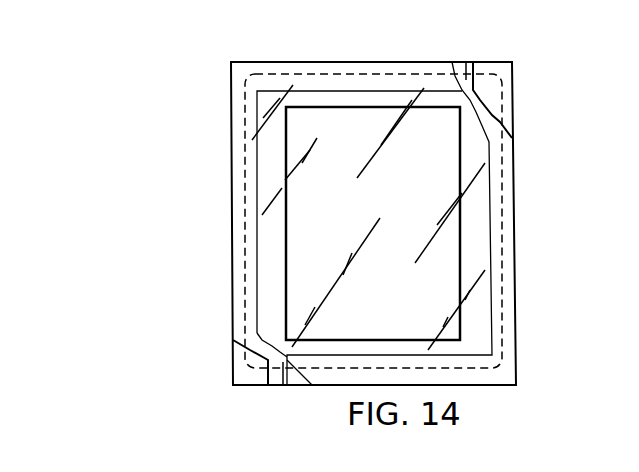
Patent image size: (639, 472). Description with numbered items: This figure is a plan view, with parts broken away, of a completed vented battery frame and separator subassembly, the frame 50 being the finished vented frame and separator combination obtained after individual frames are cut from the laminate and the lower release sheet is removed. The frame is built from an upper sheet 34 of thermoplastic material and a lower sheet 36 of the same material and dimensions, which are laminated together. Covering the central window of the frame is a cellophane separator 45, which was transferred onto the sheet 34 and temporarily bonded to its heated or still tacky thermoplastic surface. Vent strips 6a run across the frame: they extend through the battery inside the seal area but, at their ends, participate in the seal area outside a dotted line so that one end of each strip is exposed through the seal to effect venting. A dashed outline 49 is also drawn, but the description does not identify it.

The strips 6a is at (472, 49).
The sheet 34 is at (502, 172).
The sheet 36 is at (488, 90).
The cellophane separator 45 is at (477, 241).
The sealing strip 49 is at (335, 74).
The frame 50 is at (530, 133).